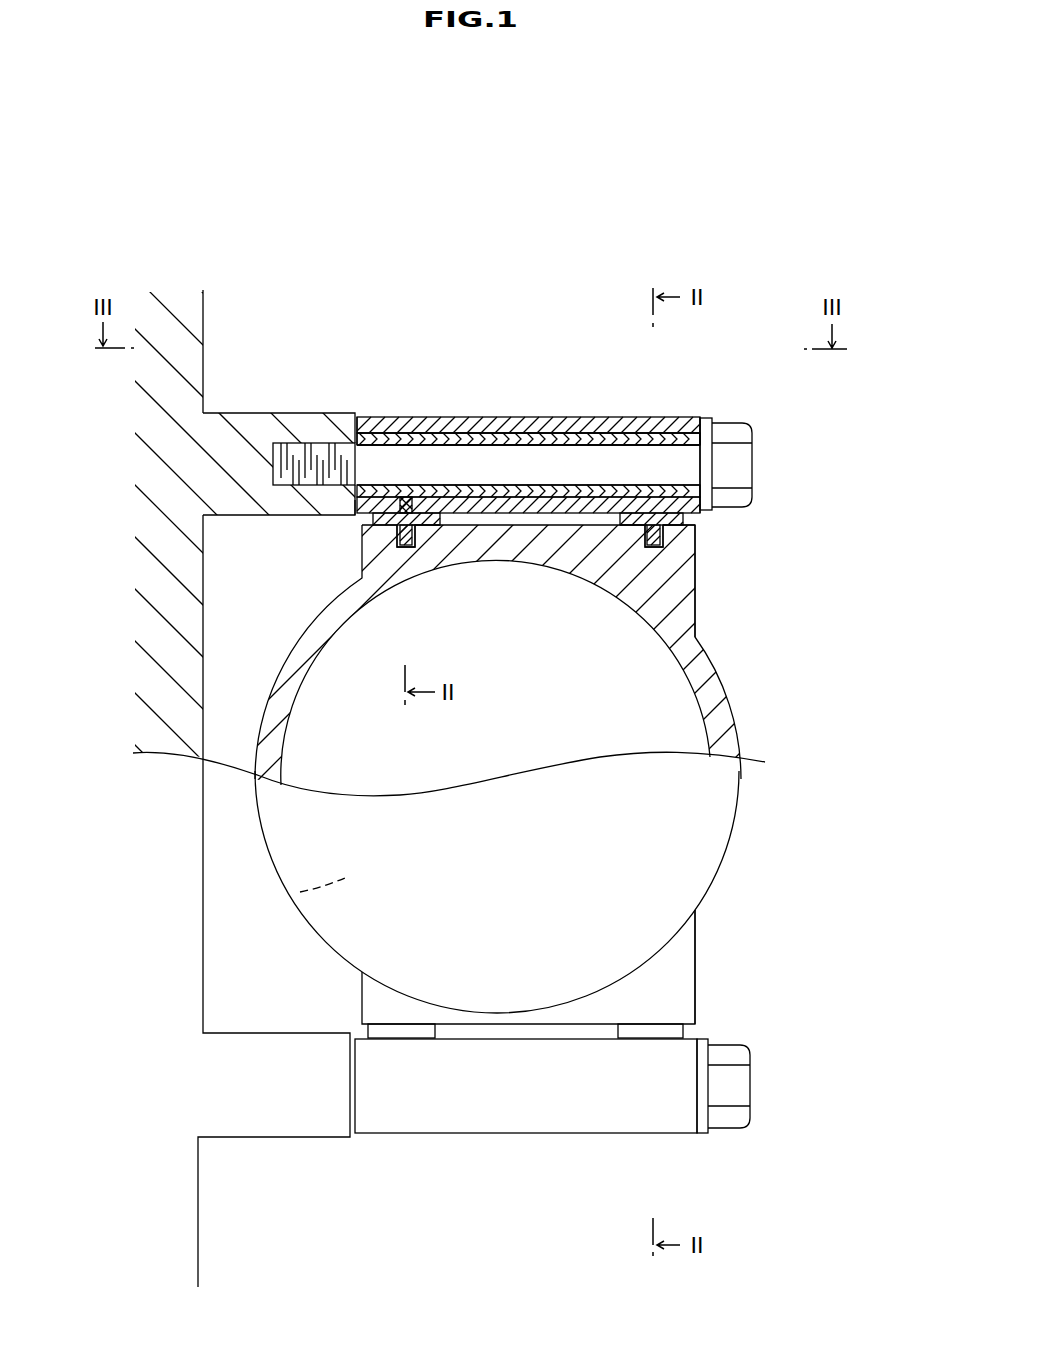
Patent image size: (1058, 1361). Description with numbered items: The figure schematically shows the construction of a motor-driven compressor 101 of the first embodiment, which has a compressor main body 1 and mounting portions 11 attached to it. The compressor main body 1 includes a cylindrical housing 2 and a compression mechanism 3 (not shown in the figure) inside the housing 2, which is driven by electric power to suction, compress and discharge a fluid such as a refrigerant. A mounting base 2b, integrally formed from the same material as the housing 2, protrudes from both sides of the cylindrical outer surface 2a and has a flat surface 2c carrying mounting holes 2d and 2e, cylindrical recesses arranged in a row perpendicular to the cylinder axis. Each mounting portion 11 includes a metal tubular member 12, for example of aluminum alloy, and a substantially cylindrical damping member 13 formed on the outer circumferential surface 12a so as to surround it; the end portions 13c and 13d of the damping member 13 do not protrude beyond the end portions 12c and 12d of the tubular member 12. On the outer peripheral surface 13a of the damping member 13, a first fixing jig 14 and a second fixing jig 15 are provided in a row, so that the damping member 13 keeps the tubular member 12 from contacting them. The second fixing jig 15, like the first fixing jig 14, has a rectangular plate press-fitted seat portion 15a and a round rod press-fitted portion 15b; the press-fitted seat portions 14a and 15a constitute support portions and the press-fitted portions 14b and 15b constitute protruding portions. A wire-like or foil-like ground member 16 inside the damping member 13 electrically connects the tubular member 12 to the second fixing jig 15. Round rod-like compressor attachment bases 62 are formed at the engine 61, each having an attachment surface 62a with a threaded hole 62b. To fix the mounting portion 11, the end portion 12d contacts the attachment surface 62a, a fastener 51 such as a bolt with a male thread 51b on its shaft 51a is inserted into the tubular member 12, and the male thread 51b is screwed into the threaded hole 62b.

The motor-driven compressor 101 is at (795, 241).
The compressor main body 1 is at (742, 864).
The housing 2 is at (736, 690).
The cylindrical outer surface 2a is at (724, 738).
The mounting base 2b is at (690, 603).
The flat surface 2c is at (693, 528).
The mounting hole 2d is at (660, 546).
The mounting hole 2e is at (410, 548).
The compression mechanism 3 is at (300, 892).
The mounting portion 11 is at (771, 343).
The tubular member 12 is at (570, 440).
The outer circumferential surface 12a is at (608, 447).
The end portion 12c is at (712, 440).
The end portion 12d is at (355, 438).
The damping member 13 is at (490, 418).
The outer peripheral surface 13a is at (526, 433).
The end portion 13c is at (705, 419).
The end portion 13d is at (356, 418).
The first fixing jig 14 is at (686, 519).
The press-fitted seat portion 14a is at (640, 545).
The press-fitted portion 14b is at (655, 550).
The second fixing jig 15 is at (375, 520).
The press-fitted seat portion 15a is at (432, 530).
The press-fitted portion 15b is at (404, 545).
The ground member 16 is at (432, 497).
The fastener 51 is at (752, 465).
The shaft 51a is at (655, 462).
The male thread 51b is at (275, 447).
The engine 61 is at (208, 297).
The compressor attachment base 62 is at (234, 411).
The attachment surface 62a is at (355, 515).
The threaded hole 62b is at (275, 470).